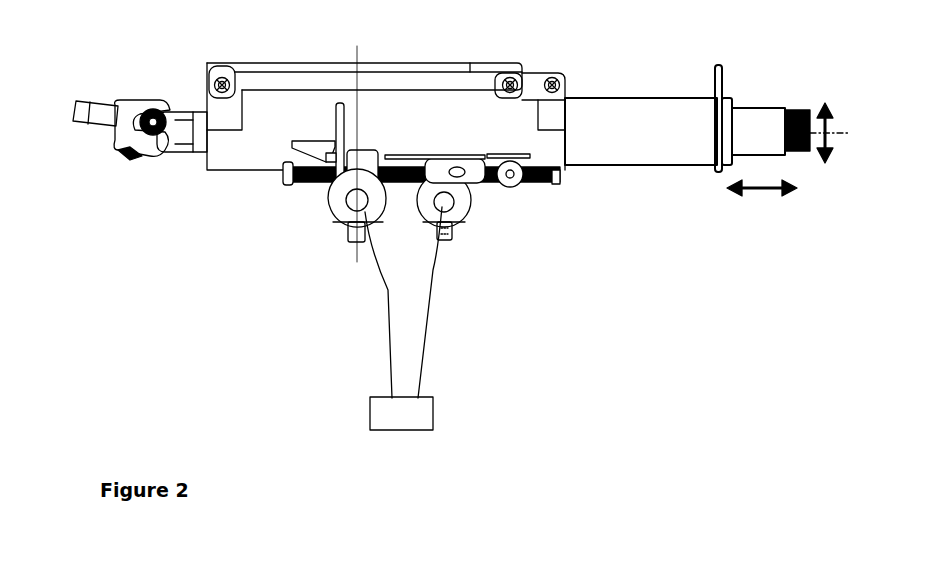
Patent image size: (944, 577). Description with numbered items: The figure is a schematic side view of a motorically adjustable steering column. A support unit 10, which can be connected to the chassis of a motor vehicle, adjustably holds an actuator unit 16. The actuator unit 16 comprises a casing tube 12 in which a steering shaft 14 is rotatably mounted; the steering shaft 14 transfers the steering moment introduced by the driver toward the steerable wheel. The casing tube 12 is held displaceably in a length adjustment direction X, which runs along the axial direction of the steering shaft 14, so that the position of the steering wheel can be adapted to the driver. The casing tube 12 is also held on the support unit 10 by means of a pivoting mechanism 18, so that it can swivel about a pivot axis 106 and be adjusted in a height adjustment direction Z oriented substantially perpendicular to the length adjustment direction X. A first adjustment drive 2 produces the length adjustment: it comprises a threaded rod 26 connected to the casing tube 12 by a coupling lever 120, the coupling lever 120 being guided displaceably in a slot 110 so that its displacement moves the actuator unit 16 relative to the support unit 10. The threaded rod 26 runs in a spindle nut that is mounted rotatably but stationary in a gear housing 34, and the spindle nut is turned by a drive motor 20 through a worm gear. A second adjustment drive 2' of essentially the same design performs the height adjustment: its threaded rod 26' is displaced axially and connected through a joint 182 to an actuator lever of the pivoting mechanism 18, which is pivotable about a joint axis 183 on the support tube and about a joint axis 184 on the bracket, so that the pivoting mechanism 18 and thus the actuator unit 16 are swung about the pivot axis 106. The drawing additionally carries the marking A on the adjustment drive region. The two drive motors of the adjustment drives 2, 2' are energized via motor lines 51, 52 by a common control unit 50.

The support unit 10 is at (434, 41).
The pivot axis 106 is at (212, 82).
The joint axis 184 is at (510, 80).
The pivoting mechanism 18 is at (549, 59).
The joint axis 183 is at (563, 80).
The casing tube 12 is at (610, 122).
The actuator unit 16 is at (705, 49).
The steering shaft 14 is at (758, 127).
The threaded rod 26 is at (405, 200).
The first adjustment drive 2 is at (297, 239).
The gear housing 34 is at (346, 178).
The drive motor 20 is at (373, 218).
The second adjustment drive 2' is at (460, 225).
The coupling lever 120 is at (473, 175).
The threaded rod 26' is at (553, 205).
The joint 182 is at (516, 181).
The slot 110 is at (563, 181).
The motor line 52 is at (387, 320).
The motor line 51 is at (430, 320).
The control unit 50 is at (422, 422).
The axis A is at (360, 50).
The length adjustment direction X is at (762, 194).
The height adjustment direction Z is at (830, 128).